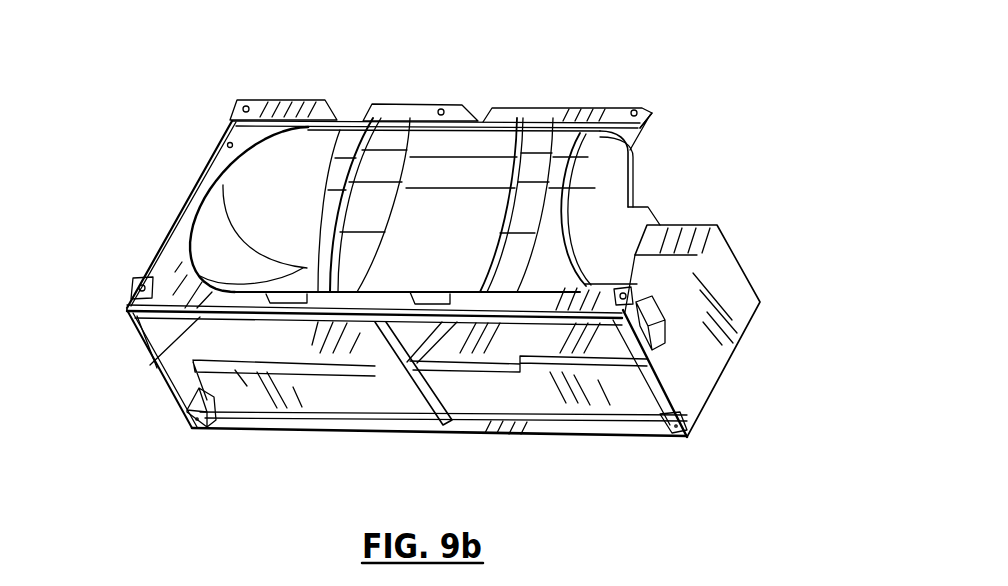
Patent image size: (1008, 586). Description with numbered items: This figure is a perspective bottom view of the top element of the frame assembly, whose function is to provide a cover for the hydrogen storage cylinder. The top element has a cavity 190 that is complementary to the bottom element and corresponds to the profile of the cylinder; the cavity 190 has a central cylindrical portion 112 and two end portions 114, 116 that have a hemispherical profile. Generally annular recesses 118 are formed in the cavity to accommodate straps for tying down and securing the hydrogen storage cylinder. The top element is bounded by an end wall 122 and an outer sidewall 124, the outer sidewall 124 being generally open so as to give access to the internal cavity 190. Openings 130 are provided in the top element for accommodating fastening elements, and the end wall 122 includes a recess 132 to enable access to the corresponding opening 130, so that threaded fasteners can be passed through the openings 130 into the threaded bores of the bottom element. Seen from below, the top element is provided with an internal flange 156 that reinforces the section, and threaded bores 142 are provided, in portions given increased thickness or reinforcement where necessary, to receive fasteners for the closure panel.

The central cylindrical portion 112 is at (497, 166).
The end portion 114 is at (206, 246).
The end portion 116 is at (603, 200).
The annular recess 118 is at (388, 135).
The end wall 122 is at (718, 321).
The outer sidewall 124 is at (689, 438).
The opening 130 is at (246, 106).
The recess 132 is at (667, 333).
The threaded bore 142 is at (190, 428).
The internal flange 156 is at (382, 344).
The cavity 190 is at (232, 342).